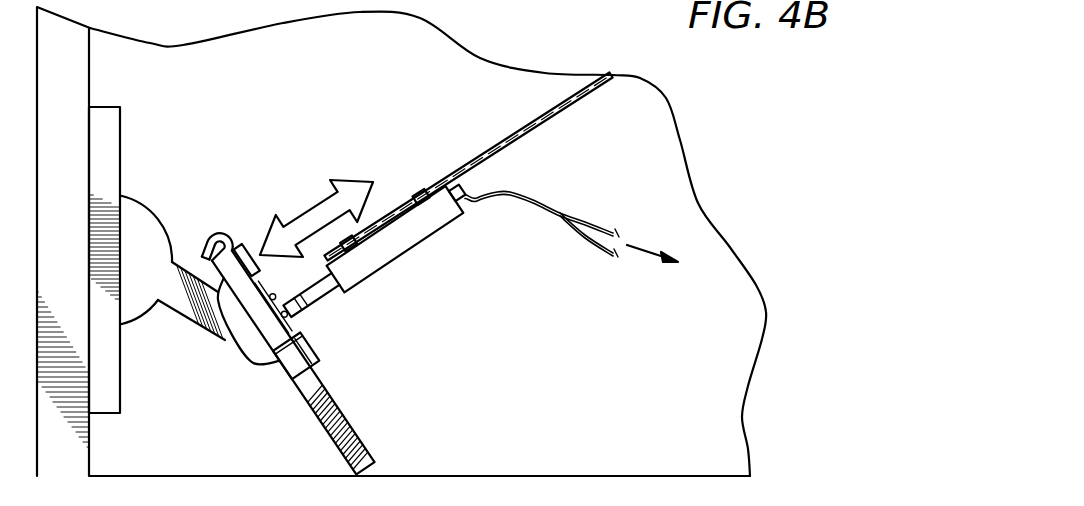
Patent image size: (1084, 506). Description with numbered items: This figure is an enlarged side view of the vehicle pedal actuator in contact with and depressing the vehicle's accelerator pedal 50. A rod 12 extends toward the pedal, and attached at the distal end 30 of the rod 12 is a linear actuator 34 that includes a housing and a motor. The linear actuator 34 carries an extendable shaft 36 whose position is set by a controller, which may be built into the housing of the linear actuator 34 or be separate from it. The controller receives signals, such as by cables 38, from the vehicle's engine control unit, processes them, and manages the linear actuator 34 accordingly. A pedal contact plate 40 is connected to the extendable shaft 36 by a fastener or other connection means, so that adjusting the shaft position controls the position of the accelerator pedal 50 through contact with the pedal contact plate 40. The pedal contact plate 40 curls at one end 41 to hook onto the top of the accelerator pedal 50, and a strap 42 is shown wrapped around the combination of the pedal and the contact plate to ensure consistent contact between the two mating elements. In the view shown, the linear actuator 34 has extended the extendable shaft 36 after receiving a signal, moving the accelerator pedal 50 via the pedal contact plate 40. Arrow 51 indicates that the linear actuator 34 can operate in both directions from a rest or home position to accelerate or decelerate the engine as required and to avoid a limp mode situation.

The rod 12 is at (570, 103).
The distal end 30 is at (394, 231).
The linear actuator 34 is at (413, 248).
The extendable shaft 36 is at (320, 293).
The cables 38 is at (563, 213).
The pedal contact plate 40 is at (233, 234).
The curled end 41 is at (207, 240).
The strap 42 is at (287, 372).
The accelerator pedal 50 is at (228, 263).
The arrow 51 is at (315, 207).